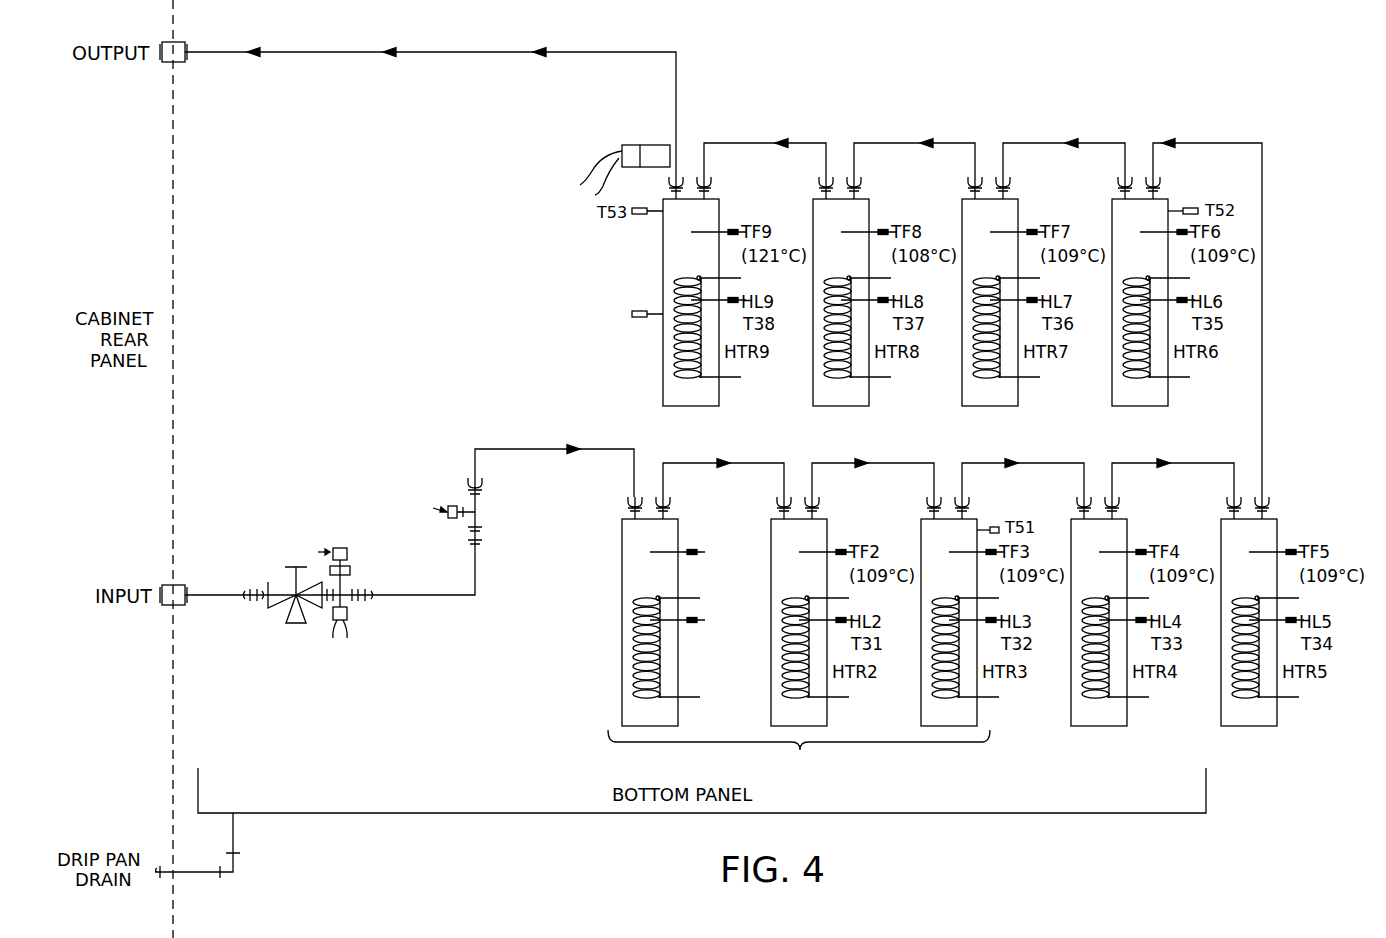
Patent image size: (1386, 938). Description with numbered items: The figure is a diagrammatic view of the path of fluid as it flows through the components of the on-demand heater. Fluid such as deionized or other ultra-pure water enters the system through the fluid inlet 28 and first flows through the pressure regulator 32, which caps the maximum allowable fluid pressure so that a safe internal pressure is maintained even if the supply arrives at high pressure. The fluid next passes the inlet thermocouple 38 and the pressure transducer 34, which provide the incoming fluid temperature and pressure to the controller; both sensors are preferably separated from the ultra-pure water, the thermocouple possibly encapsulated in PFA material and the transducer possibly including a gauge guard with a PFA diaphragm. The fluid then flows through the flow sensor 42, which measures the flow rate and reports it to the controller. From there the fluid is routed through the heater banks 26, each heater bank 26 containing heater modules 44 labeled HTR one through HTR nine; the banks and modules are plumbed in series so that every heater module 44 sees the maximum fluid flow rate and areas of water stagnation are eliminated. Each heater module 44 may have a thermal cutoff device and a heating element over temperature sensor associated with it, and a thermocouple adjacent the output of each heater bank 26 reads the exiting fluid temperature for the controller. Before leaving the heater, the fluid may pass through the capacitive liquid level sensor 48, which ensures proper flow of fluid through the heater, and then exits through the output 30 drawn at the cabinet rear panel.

The heater bank 26 is at (800, 750).
The fluid inlet 28 is at (180, 608).
The output connector 30 is at (180, 42).
The pressure regulator 32 is at (306, 545).
The pressure transducer 34 is at (342, 542).
The inlet thermocouple 38 is at (347, 616).
The flow sensor 42 is at (421, 500).
The heater module 44 is at (631, 702).
The capacitive liquid level sensor 48 is at (630, 145).